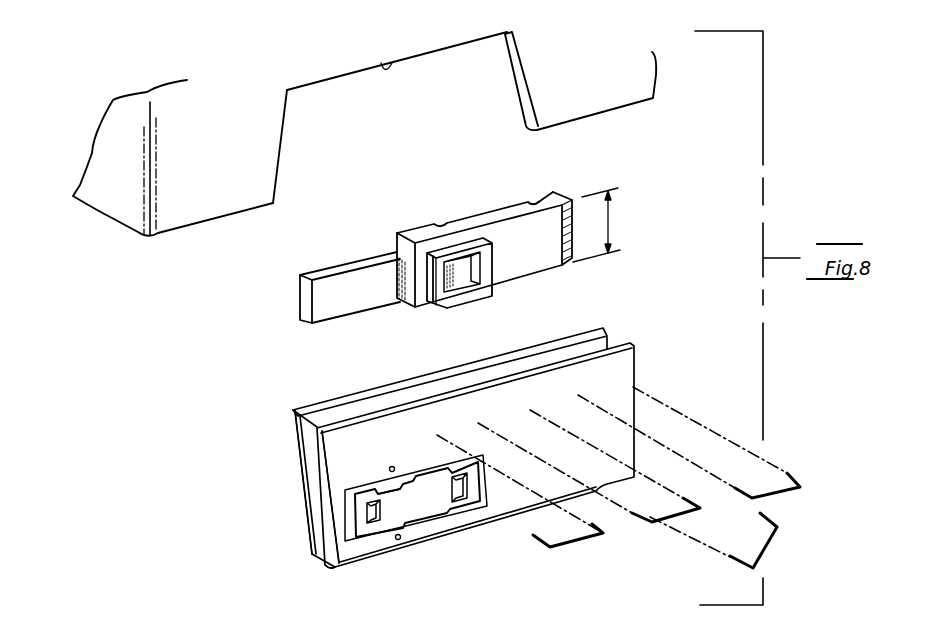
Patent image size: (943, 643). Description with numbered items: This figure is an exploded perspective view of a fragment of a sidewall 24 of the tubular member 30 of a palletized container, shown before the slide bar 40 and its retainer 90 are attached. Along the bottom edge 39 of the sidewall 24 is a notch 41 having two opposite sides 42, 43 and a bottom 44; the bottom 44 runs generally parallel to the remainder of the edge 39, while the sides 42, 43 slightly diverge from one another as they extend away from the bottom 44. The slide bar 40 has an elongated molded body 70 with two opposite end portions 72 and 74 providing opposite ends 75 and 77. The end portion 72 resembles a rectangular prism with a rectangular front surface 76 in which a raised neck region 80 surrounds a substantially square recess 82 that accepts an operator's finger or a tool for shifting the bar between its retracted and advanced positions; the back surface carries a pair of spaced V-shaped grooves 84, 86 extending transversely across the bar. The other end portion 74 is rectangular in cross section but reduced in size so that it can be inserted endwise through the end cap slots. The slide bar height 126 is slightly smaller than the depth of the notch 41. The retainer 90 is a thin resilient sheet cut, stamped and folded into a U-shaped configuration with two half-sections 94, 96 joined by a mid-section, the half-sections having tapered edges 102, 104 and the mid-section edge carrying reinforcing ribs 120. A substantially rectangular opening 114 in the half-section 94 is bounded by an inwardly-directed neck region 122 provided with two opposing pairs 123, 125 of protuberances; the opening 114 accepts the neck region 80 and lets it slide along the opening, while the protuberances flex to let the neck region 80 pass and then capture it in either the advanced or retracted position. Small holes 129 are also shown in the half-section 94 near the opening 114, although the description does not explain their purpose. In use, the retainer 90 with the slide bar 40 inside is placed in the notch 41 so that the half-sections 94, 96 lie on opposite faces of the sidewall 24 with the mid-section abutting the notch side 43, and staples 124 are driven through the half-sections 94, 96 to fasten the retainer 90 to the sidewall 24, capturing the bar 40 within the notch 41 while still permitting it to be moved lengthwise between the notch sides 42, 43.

The sidewall 24 is at (580, 95).
The tubular member 30 is at (290, 146).
The bottom edge 39 is at (205, 225).
The slide bar 40 is at (457, 252).
The notch 41 is at (283, 167).
The notch side 42 is at (285, 120).
The notch side 43 is at (510, 86).
The notch bottom 44 is at (388, 68).
The elongated body 70 is at (505, 270).
The end portion 72 is at (488, 212).
The end portion 74 is at (320, 277).
The end 75 is at (572, 228).
The front surface 76 is at (542, 260).
The end 77 is at (300, 295).
The raised neck region 80 is at (447, 311).
The recess 82 is at (455, 292).
The groove 84 is at (438, 225).
The groove 86 is at (532, 198).
The retainer 90 is at (531, 463).
The half-section 94 is at (414, 447).
The half-section 96 is at (438, 469).
The tapered edge 102 is at (323, 522).
The tapered edge 104 is at (292, 503).
The rectangular opening 114 is at (380, 508).
The reinforcing ribs 120 is at (312, 557).
The neck region 122 is at (410, 468).
The protuberance pair 123 is at (380, 483).
The staples 124 is at (652, 522).
The protuberance pair 125 is at (452, 477).
The slide bar height 126 is at (613, 218).
The holes 129 is at (392, 466).